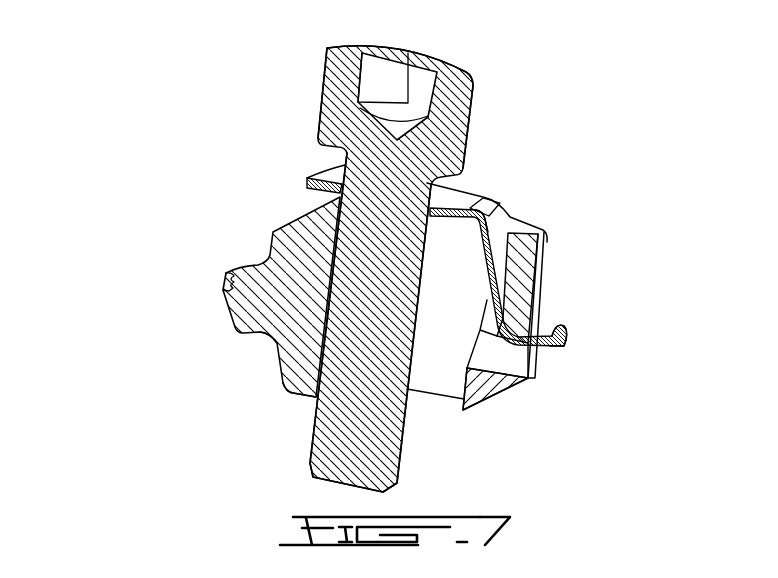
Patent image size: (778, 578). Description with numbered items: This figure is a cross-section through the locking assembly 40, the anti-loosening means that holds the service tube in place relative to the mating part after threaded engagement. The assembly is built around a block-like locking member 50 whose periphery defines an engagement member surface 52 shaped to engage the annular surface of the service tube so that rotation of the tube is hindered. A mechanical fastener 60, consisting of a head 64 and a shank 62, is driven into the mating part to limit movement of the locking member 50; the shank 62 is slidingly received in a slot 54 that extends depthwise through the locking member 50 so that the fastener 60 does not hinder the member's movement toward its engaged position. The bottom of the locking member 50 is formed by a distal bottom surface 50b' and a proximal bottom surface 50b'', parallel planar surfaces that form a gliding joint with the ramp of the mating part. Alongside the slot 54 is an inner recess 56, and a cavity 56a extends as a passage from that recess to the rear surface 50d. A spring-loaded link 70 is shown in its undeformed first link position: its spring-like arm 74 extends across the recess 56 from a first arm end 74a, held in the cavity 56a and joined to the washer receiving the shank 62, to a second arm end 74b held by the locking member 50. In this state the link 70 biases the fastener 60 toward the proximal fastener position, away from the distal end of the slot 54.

The locking assembly 40 is at (100, 78).
The locking member 50 is at (207, 373).
The engagement member surface 52 is at (205, 292).
The distal bottom surface 50b' is at (496, 424).
The proximal bottom surface 50b'' is at (274, 398).
The rear surface 50d is at (538, 302).
The slot 54 is at (487, 212).
The inner recess 56 is at (512, 221).
The cavity 56a is at (530, 372).
The mechanical fastener 60 is at (503, 57).
The shank 62 is at (402, 440).
The head 64 is at (467, 120).
The link 70 is at (575, 386).
The spring-like arm 74 is at (498, 281).
The first arm end 74a is at (531, 358).
The second arm end 74b is at (481, 216).